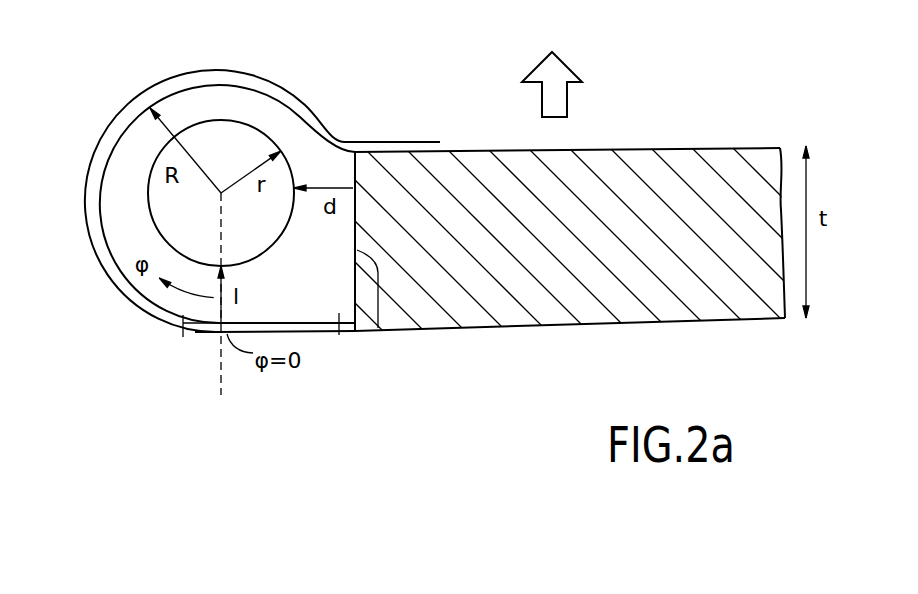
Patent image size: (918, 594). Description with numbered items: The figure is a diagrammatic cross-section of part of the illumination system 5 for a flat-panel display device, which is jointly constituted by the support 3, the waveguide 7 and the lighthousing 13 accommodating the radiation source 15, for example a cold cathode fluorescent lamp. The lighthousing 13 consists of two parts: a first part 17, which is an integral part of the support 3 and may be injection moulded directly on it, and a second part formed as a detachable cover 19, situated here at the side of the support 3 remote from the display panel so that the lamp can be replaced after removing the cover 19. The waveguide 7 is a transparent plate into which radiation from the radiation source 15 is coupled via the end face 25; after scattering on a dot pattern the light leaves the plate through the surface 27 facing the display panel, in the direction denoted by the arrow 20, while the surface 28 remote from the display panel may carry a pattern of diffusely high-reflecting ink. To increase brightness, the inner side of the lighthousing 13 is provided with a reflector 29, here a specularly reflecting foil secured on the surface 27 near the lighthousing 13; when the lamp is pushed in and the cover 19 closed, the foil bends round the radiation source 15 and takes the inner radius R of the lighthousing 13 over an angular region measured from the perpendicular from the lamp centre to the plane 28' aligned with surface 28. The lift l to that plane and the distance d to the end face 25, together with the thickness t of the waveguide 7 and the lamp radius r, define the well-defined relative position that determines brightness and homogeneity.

The support 3 is at (410, 142).
The illumination system 5 is at (105, 450).
The waveguide 7 is at (630, 298).
The lighthousing 13 is at (107, 78).
The radiation source 15 is at (174, 228).
The first part of the lighthousing 17 is at (245, 73).
The detachable cover 19 is at (203, 334).
The arrow 20 is at (558, 73).
The end face 25 is at (378, 328).
The surface of the waveguide facing the display panel 27 is at (663, 148).
The surface remote from the display panel 28 is at (570, 344).
The plane aligned with surface 28 28' is at (266, 346).
The reflector 29 is at (100, 213).